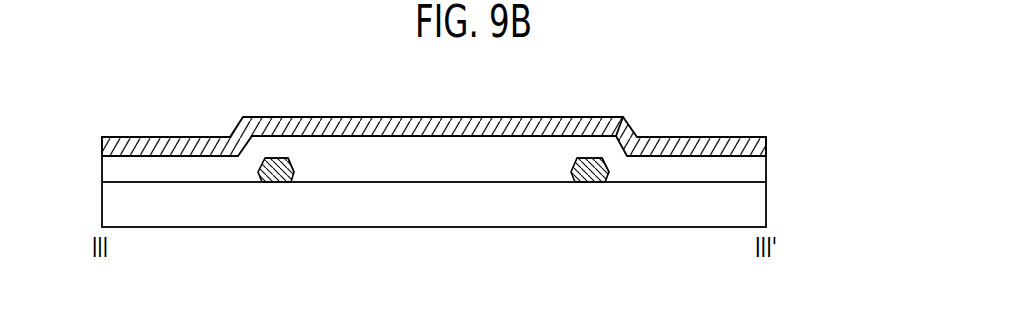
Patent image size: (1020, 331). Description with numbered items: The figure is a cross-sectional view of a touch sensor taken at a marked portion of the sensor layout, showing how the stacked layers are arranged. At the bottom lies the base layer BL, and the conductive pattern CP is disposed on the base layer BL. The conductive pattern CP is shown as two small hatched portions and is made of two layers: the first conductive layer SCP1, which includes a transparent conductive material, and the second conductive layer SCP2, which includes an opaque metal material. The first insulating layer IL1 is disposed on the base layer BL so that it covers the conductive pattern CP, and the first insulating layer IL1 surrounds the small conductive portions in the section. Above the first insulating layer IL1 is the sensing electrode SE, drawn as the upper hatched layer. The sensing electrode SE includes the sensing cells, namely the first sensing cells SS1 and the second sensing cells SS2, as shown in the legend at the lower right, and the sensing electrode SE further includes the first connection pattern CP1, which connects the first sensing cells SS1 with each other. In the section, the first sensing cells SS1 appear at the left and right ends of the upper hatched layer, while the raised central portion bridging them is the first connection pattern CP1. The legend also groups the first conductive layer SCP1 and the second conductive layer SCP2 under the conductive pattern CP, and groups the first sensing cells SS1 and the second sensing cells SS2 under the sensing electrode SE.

The first sensing cell SS1 is at (102, 146).
The second sensing cell SS2 is at (632, 302).
The sensing electrode SE is at (612, 275).
The conductive pattern CP is at (720, 275).
The first connection pattern CP1 is at (513, 126).
The first conductive layer SCP1 is at (260, 180).
The second conductive layer SCP2 is at (291, 157).
The first insulating layer IL1 is at (763, 170).
The base layer BL is at (763, 205).